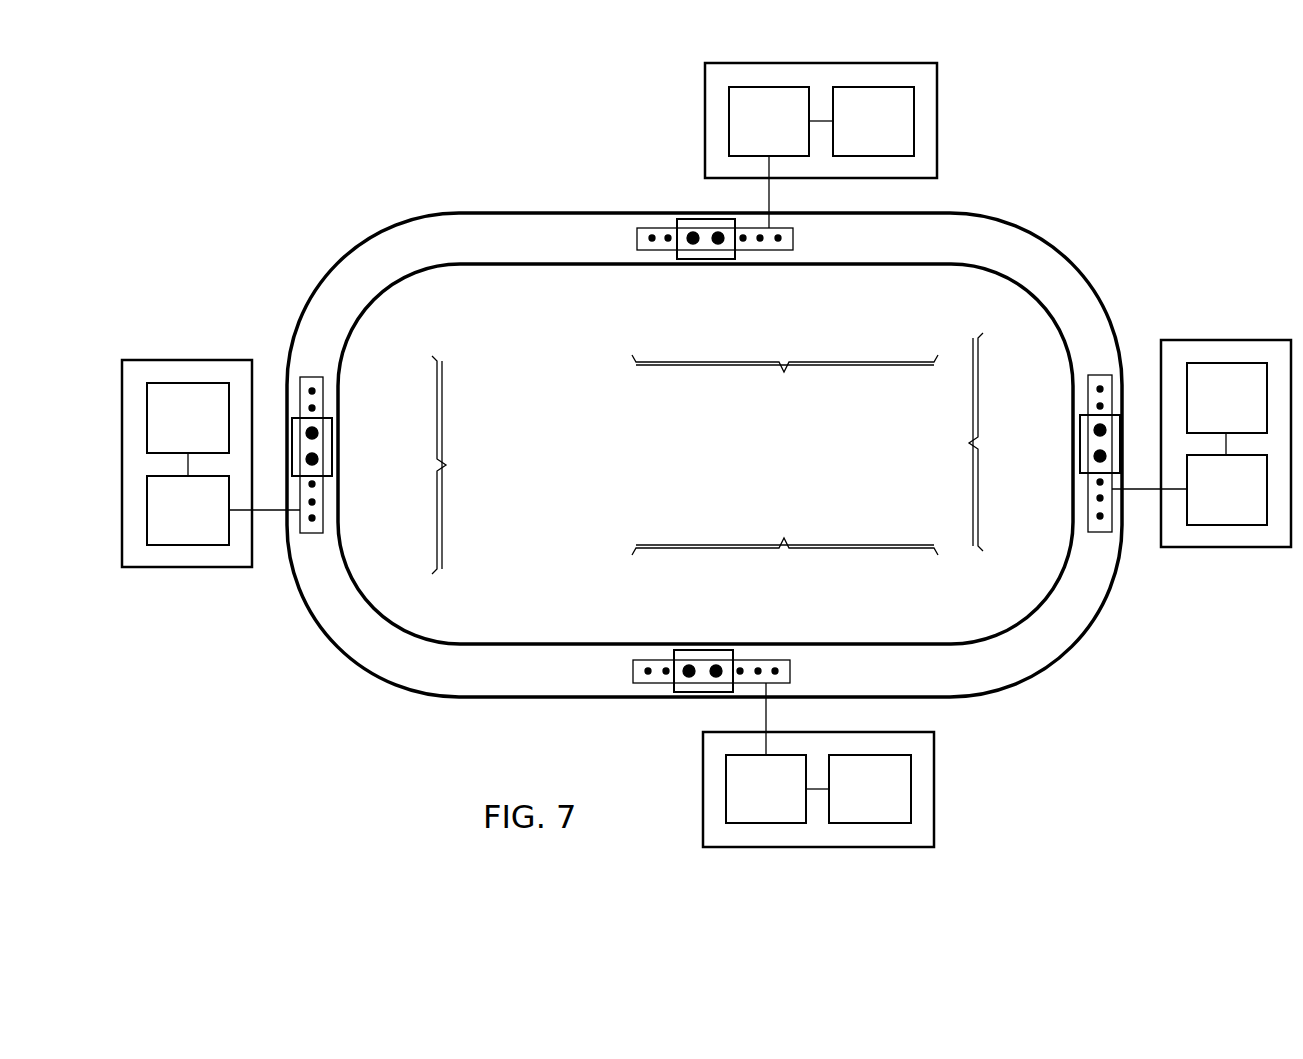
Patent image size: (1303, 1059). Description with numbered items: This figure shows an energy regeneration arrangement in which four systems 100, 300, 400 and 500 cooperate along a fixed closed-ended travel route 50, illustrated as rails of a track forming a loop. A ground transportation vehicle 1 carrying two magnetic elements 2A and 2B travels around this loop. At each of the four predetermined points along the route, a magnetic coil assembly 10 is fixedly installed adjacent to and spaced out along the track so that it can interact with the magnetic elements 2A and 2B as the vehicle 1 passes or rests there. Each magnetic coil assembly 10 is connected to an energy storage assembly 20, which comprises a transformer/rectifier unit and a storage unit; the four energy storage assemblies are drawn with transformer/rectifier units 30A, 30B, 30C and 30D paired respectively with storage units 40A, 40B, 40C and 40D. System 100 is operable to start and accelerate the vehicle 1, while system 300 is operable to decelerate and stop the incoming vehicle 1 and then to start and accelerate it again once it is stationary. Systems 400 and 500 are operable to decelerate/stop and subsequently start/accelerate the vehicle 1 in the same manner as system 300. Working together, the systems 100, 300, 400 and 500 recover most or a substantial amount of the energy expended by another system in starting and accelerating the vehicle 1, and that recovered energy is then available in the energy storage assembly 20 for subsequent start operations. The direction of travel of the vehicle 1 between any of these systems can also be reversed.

The ground transportation vehicle 1 is at (704, 259).
The magnetic element 2A is at (720, 248).
The magnetic element 2B is at (693, 248).
The magnetic coil assembly 10 is at (668, 228).
The energy storage assembly 20 is at (946, 119).
The transformer/rectifier unit 30A is at (741, 803).
The transformer/rectifier unit 30B is at (1202, 504).
The transformer/rectifier unit 30C is at (744, 135).
The transformer/rectifier unit 30D is at (163, 524).
The storage unit 40A is at (845, 803).
The storage unit 40B is at (1202, 412).
The storage unit 40C is at (848, 135).
The storage unit 40D is at (163, 432).
The travel route 50 is at (869, 683).
The ground transportation system 100 is at (785, 530).
The system 300 is at (950, 442).
The system 400 is at (785, 381).
The system 500 is at (465, 465).